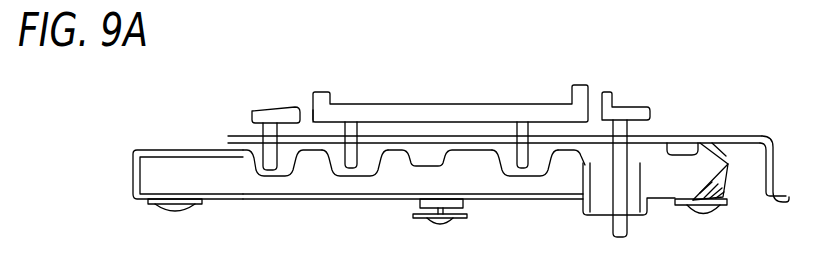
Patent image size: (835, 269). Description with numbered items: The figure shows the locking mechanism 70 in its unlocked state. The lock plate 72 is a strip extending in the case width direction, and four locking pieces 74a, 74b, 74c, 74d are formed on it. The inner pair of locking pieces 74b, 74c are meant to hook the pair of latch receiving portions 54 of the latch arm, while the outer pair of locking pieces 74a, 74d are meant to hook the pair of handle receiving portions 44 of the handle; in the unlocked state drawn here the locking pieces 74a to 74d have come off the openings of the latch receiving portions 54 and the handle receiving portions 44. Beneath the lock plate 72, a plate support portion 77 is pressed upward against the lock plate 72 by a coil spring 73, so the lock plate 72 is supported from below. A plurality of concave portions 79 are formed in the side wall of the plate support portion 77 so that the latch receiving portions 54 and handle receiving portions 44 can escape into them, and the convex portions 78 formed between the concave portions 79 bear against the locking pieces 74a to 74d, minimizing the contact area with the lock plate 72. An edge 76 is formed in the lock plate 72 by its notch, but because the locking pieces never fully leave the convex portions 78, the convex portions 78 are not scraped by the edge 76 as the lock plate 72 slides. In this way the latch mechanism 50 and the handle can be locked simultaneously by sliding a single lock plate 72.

The handle receiving portion 44 is at (642, 155).
The latch mechanism 50 is at (446, 103).
The latch receiving portion 54 is at (348, 180).
The locking mechanism 70 is at (702, 92).
The lock plate 72 is at (732, 134).
The coil spring 73 is at (727, 190).
The locking piece 74a is at (636, 107).
The locking piece 74b is at (548, 140).
The locking piece 74c is at (378, 136).
The locking piece 74d is at (283, 108).
The edge 76 is at (297, 172).
The plate support portion 77 is at (562, 187).
The convex portion 78 is at (312, 125).
The concave portion 79 is at (245, 197).